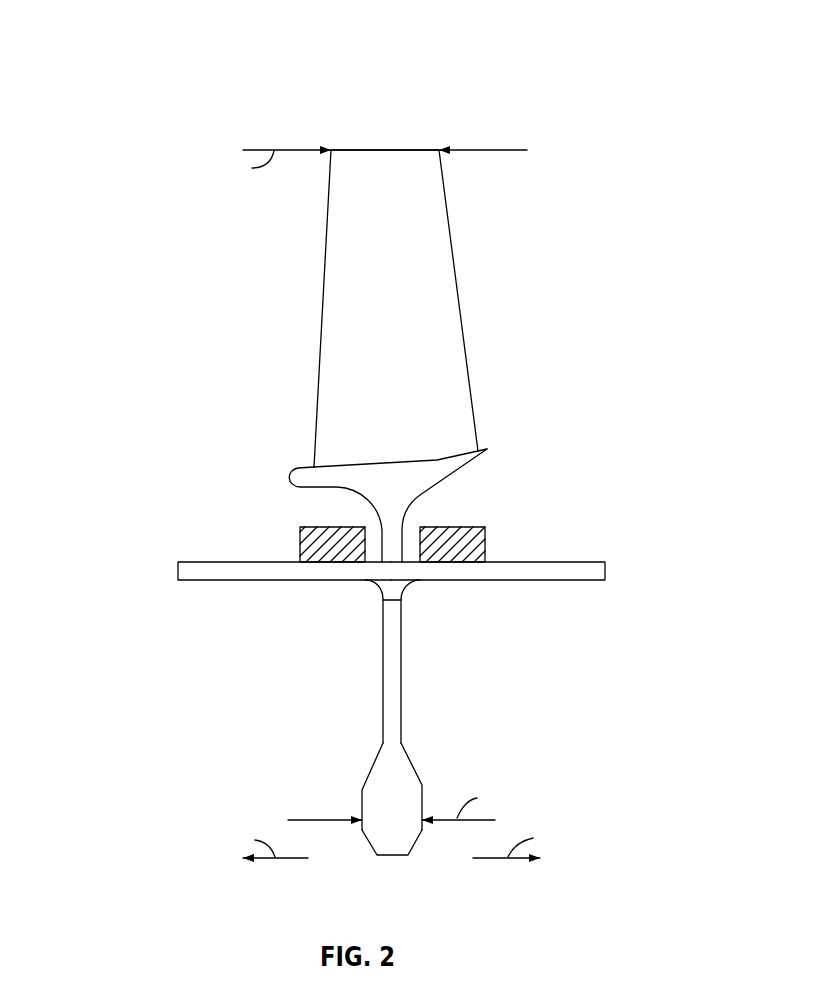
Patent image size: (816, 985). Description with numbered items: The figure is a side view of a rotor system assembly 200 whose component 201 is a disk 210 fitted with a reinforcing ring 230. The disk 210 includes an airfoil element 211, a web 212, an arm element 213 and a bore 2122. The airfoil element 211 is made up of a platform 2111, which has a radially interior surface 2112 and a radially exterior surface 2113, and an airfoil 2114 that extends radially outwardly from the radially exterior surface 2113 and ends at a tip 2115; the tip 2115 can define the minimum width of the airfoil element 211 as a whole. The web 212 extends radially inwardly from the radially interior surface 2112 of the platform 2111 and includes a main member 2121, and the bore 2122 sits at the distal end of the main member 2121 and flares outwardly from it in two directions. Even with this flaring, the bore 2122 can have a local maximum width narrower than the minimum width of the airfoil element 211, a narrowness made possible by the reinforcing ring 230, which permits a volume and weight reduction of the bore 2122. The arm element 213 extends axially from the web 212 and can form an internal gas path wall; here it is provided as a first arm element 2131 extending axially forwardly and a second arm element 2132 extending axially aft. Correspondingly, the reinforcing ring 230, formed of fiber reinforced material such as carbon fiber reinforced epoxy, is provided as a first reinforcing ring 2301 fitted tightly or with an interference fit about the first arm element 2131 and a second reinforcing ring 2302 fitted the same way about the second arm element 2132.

The blade assembly 200 is at (482, 99).
The component 201 is at (336, 139).
The platform 2111 is at (480, 449).
The radially interior surface 2112 is at (438, 487).
The radially exterior surface 2113 is at (437, 460).
The airfoil 2114 is at (335, 296).
The tip 2115 is at (370, 157).
The airfoil element 211 is at (310, 467).
The web 212 is at (378, 751).
The main member 2121 is at (400, 687).
The bore 2122 is at (370, 798).
The disk 210 is at (392, 858).
The arm element 213 is at (392, 588).
The first arm element 2131 is at (177, 568).
The second arm element 2132 is at (605, 567).
The reinforcing ring 230 is at (392, 531).
The first reinforcing ring 2301 is at (297, 530).
The second reinforcing ring 2302 is at (487, 553).